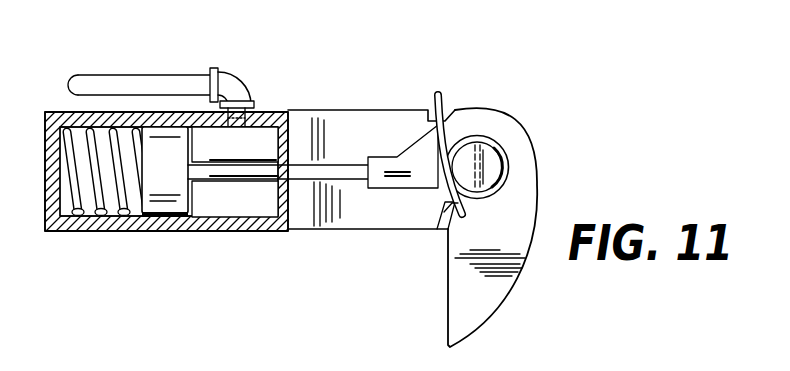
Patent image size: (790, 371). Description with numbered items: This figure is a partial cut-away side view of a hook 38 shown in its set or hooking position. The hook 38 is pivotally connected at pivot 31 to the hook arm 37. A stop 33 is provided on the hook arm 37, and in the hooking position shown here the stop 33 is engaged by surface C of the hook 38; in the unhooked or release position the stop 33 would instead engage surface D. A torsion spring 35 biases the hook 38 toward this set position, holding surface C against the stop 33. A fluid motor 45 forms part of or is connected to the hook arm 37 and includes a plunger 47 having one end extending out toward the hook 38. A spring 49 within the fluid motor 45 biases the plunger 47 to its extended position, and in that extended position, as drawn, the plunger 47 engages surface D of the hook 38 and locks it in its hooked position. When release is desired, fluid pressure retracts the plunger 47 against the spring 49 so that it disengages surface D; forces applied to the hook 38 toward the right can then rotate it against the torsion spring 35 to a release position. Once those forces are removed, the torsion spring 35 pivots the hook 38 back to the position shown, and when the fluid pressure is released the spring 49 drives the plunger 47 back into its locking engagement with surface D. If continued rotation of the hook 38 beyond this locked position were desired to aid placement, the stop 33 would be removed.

The pivot connection 31 is at (485, 167).
The stop 33 is at (445, 215).
The torsion spring 35 is at (447, 137).
The hook arm 37 is at (307, 222).
The hook 38 is at (549, 124).
The fluid motor 45 is at (261, 142).
The plunger 47 is at (265, 182).
The spring 49 is at (104, 210).
The surface D is at (432, 145).
The surface C is at (443, 230).